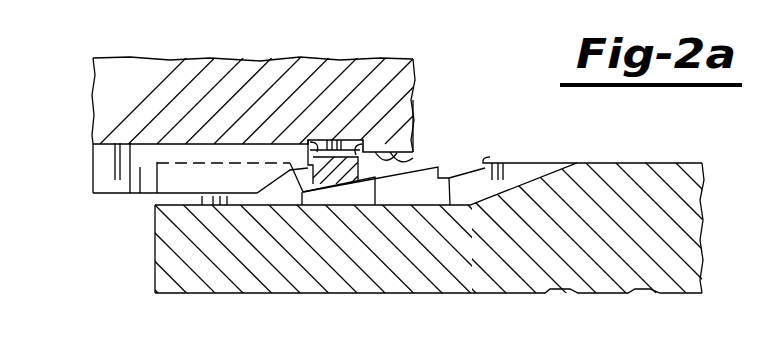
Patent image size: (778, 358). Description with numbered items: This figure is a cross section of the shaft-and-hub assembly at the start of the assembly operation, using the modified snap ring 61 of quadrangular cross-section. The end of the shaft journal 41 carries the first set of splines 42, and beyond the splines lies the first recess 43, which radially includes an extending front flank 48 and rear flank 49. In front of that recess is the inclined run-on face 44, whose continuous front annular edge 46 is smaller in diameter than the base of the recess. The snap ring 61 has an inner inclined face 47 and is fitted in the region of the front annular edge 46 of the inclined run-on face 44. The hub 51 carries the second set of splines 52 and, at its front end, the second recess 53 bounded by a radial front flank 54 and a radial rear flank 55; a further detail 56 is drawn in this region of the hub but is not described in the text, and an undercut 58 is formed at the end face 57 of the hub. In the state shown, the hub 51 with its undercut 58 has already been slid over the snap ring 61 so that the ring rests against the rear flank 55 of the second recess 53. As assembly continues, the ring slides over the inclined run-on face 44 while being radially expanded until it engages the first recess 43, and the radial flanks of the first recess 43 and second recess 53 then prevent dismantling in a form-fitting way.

The shaft journal 41 is at (172, 258).
The first set of splines 42 is at (276, 196).
The first recess 43 is at (474, 165).
The inclined run-on face 44 is at (377, 190).
The front annular edge 46 is at (305, 192).
The inner inclined face 47 is at (333, 192).
The front flank 48 is at (490, 160).
The rear flank 49 is at (452, 182).
The hub 51 is at (115, 88).
The second set of splines 52 is at (120, 170).
The second recess 53 is at (332, 140).
The front flank 54 is at (386, 140).
The rear flank 55 is at (317, 140).
The retaining lip 56 is at (363, 143).
The end face 57 is at (420, 98).
The undercut 58 is at (419, 166).
The snap ring 61 is at (398, 166).